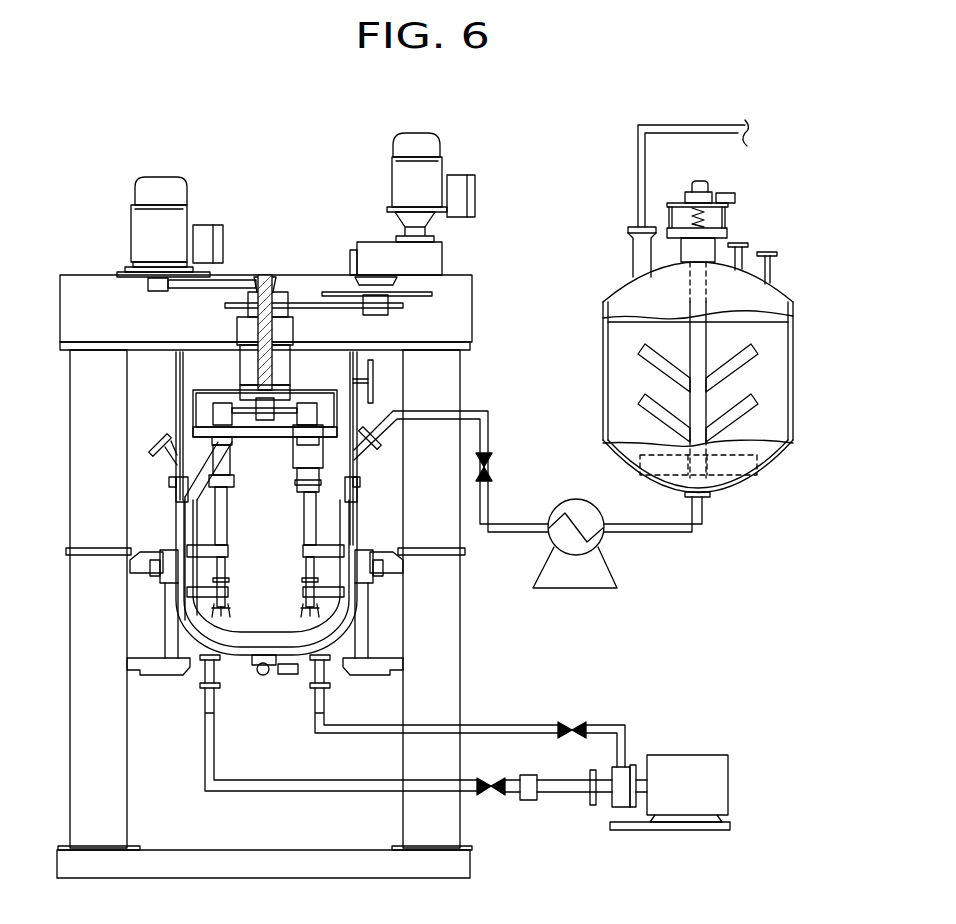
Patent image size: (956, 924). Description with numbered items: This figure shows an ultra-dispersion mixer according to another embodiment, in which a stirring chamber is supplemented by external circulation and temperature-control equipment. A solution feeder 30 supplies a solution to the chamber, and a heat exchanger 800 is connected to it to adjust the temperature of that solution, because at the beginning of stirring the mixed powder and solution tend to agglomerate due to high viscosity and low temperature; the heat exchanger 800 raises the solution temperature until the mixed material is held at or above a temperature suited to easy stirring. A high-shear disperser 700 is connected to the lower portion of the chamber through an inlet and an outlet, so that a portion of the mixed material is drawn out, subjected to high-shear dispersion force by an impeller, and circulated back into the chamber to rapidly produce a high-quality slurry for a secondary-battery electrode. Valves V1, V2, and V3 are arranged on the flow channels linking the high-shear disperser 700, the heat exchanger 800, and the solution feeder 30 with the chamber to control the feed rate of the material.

The valve V3 is at (493, 467).
The solution feeder 30 is at (770, 418).
The heat exchanger 800 is at (608, 568).
The valve V1 is at (576, 722).
The valve V2 is at (495, 797).
The high-shear disperser 700 is at (687, 755).